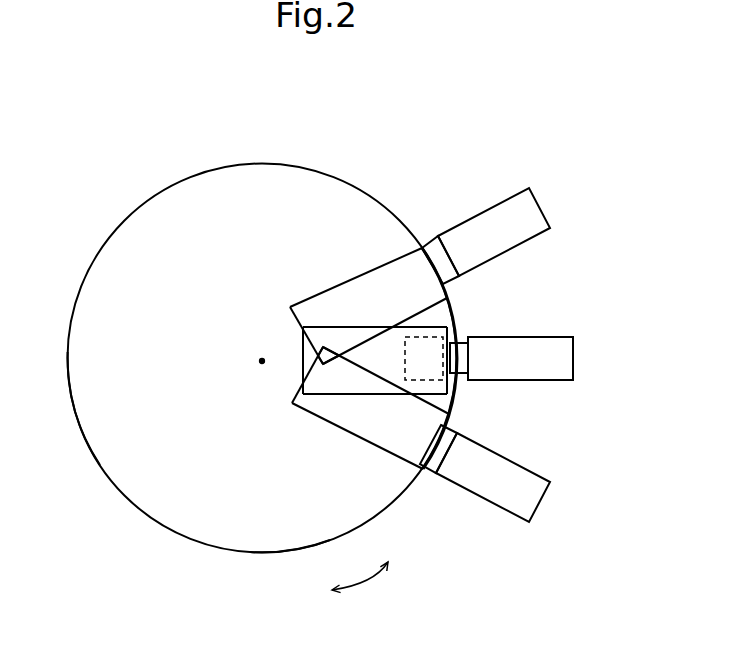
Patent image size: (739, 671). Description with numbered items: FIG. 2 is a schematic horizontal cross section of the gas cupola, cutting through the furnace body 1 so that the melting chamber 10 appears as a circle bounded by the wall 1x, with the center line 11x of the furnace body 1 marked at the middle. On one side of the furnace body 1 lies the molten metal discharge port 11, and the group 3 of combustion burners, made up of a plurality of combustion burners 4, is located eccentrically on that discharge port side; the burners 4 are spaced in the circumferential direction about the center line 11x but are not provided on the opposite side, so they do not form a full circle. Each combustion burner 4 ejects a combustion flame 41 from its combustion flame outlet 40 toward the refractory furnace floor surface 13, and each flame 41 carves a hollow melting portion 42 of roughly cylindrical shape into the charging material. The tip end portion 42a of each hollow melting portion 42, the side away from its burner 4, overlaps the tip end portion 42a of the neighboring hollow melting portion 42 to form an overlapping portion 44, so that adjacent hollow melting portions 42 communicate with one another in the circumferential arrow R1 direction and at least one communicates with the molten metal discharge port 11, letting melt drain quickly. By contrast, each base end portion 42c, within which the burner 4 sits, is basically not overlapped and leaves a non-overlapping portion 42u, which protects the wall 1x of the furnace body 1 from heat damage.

The furnace body 1 is at (219, 558).
The wall 1x is at (292, 553).
The group of combustion burners 3 is at (602, 550).
The combustion burner 4 is at (528, 213).
The melting chamber 10 is at (175, 510).
The molten metal discharge port 11 is at (437, 337).
The center line 11x is at (258, 361).
The furnace floor surface 13 is at (127, 450).
The combustion flame outlet 40 is at (427, 270).
The combustion flame 41 is at (359, 364).
The hollow melting portion 42 is at (320, 292).
The tip end portion 42a is at (293, 307).
The base end portion 42c is at (400, 258).
The non-overlapping portion 42u is at (453, 306).
The overlapping portion 44 is at (325, 365).
The arrow R1 direction R1 is at (367, 583).